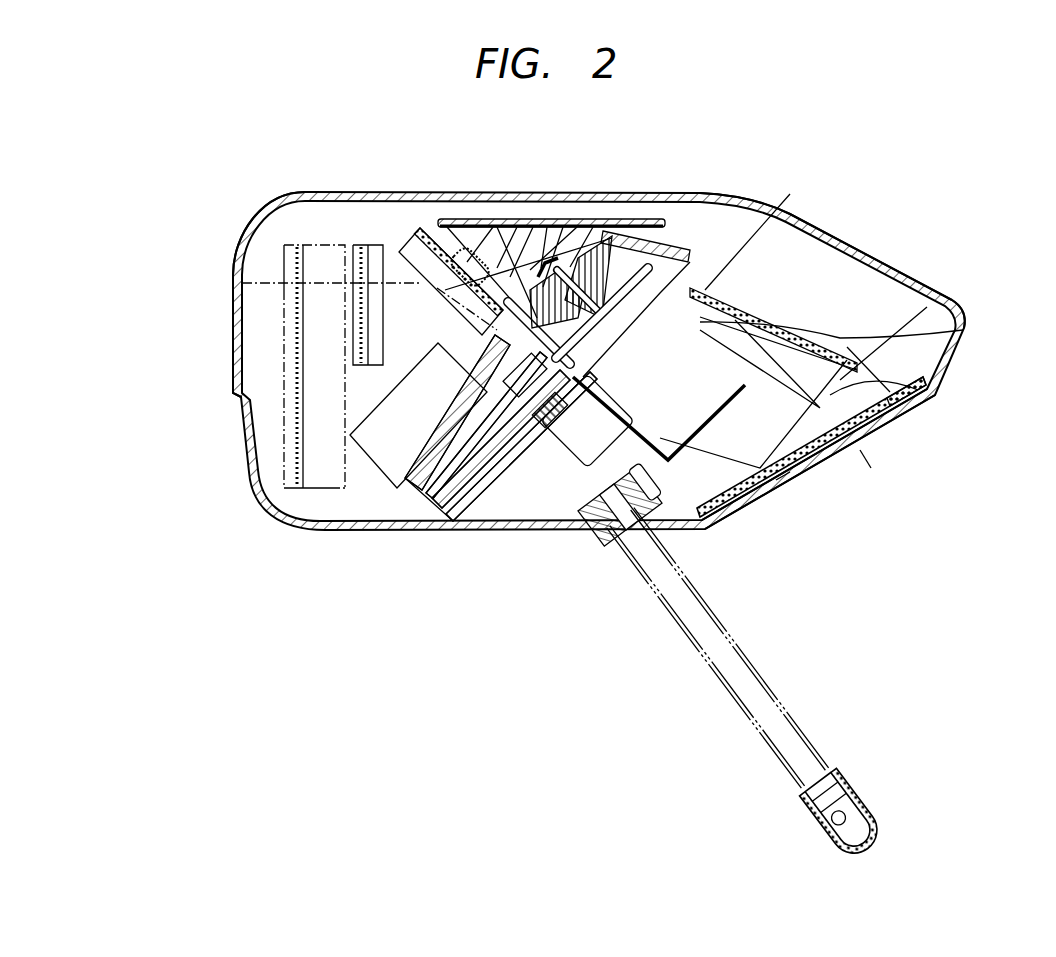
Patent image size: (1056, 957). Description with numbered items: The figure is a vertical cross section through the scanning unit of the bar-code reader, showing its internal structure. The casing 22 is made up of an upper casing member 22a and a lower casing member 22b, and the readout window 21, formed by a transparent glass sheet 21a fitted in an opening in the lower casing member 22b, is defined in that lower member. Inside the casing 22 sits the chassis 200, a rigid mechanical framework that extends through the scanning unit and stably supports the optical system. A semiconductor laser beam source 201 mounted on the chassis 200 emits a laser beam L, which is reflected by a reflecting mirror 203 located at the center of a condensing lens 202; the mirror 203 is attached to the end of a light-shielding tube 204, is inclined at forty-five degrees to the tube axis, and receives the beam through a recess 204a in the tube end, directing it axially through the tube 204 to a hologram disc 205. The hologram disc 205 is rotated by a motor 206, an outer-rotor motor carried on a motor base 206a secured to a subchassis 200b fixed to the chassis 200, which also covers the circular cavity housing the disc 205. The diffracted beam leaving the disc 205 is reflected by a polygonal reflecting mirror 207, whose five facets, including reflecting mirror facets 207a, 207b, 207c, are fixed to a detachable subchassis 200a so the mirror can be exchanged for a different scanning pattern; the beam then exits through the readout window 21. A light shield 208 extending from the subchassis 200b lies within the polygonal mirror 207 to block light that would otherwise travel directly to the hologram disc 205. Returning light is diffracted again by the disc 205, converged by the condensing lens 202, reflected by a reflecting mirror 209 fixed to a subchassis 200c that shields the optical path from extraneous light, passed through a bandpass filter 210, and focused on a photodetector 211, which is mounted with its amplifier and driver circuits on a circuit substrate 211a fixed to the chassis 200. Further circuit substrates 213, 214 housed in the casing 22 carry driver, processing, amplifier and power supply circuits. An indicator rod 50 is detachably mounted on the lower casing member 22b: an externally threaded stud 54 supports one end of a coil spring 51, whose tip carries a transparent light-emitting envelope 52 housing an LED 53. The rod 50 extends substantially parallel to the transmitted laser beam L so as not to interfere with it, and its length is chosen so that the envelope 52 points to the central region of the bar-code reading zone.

The readout window 21 is at (888, 424).
The transparent glass sheet 21a is at (780, 482).
The casing 22 is at (303, 172).
The upper casing member 22a is at (233, 270).
The lower casing member 22b is at (233, 307).
The indicator rod 50 is at (758, 685).
The coil spring 51 is at (733, 630).
The transparent light-emitting envelope 52 is at (866, 830).
The LED 53 is at (843, 812).
The externally threaded stud 54 is at (606, 542).
The laser beam L is at (866, 459).
The chassis 200 is at (730, 200).
The subchassis 200a is at (790, 213).
The subchassis 200b is at (453, 488).
The subchassis 200c is at (640, 232).
The semiconductor laser beam source 201 is at (375, 475).
The condensing lens 202 is at (646, 226).
The reflecting mirror 203 is at (568, 267).
The light-shielding tube 204 is at (698, 207).
The recess 204a is at (532, 286).
The hologram disc 205 is at (427, 492).
The motor 206 is at (577, 495).
The motor base 206a is at (500, 498).
The polygonal reflecting mirror 207 is at (852, 352).
The reflecting mirror facet 207a is at (808, 450).
The reflecting mirror facet 207b is at (912, 402).
The reflecting mirror facet 207c is at (968, 325).
The light shield 208 is at (712, 415).
The reflecting mirror 209 is at (467, 218).
The bandpass filter 210 is at (538, 275).
The photodetector 211 is at (458, 258).
The circuit substrate 211a is at (415, 232).
The circuit substrate 213 is at (361, 244).
The circuit substrate 214 is at (295, 244).